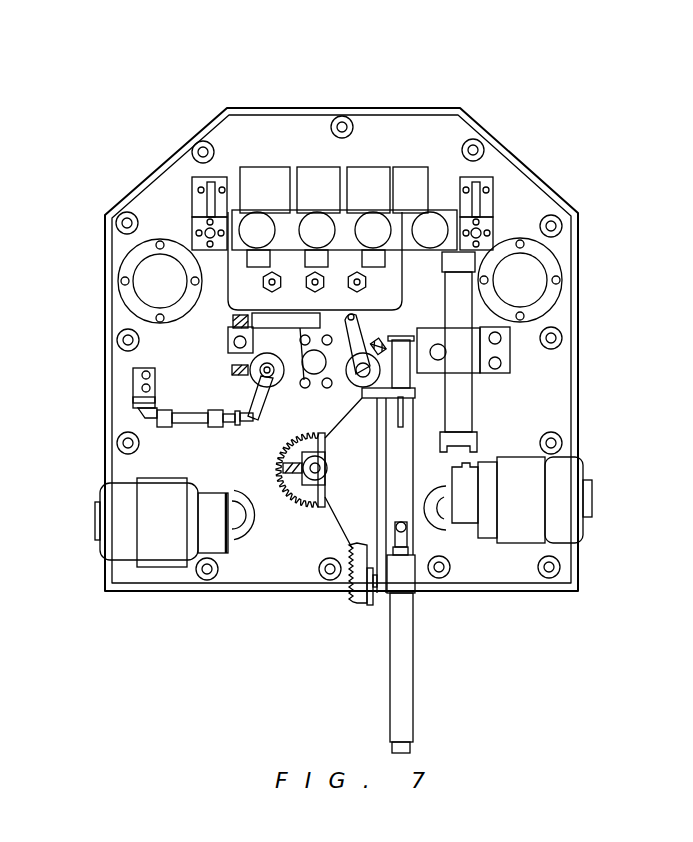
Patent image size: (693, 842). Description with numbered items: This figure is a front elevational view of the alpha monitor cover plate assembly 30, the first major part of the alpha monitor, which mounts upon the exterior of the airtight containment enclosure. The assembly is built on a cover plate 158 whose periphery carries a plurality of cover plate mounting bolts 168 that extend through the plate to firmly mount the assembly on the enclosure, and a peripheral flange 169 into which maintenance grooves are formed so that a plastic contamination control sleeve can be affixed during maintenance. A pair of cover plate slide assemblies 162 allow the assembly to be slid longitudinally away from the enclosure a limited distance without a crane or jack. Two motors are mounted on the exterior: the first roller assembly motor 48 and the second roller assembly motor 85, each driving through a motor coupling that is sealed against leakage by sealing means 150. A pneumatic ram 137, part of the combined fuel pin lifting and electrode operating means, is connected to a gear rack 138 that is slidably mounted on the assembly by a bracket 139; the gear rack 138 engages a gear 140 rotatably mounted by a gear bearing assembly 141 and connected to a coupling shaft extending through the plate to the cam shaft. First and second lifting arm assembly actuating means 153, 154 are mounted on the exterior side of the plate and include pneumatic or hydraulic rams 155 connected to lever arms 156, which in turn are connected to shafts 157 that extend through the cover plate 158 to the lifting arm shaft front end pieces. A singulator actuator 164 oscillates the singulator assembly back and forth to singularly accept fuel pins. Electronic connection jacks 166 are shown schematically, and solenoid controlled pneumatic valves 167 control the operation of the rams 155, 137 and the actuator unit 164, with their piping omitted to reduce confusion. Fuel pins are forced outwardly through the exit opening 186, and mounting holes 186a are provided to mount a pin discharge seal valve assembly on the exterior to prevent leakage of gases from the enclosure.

The alpha monitor cover plate assembly 30 is at (568, 175).
The first roller assembly motor 48 is at (570, 507).
The second roller assembly motor 85 is at (168, 530).
The pneumatic ram 137 is at (400, 633).
The gear rack 138 is at (395, 476).
The bracket 139 is at (377, 493).
The gear 140 is at (297, 451).
The gear bearing assembly 141 is at (273, 483).
The sealing means 150 is at (240, 532).
The first lifting arm assembly actuating means 153 is at (227, 343).
The second lifting arm assembly actuating means 154 is at (214, 380).
The pneumatic or hydraulic ram 155 is at (291, 320).
The lever arm 156 is at (358, 338).
The shaft 157 is at (352, 388).
The cover plate 158 is at (530, 208).
The cover plate slide assembly 162 is at (525, 287).
The singulator actuator 164 is at (479, 384).
The electronic connection jacks 166 is at (356, 170).
The solenoid controlled pneumatic valves 167 is at (344, 238).
The cover plate mounting bolts 168 is at (342, 116).
The peripheral flange 169 is at (438, 106).
The exit opening 186 is at (298, 318).
The mounting holes 186a is at (297, 317).